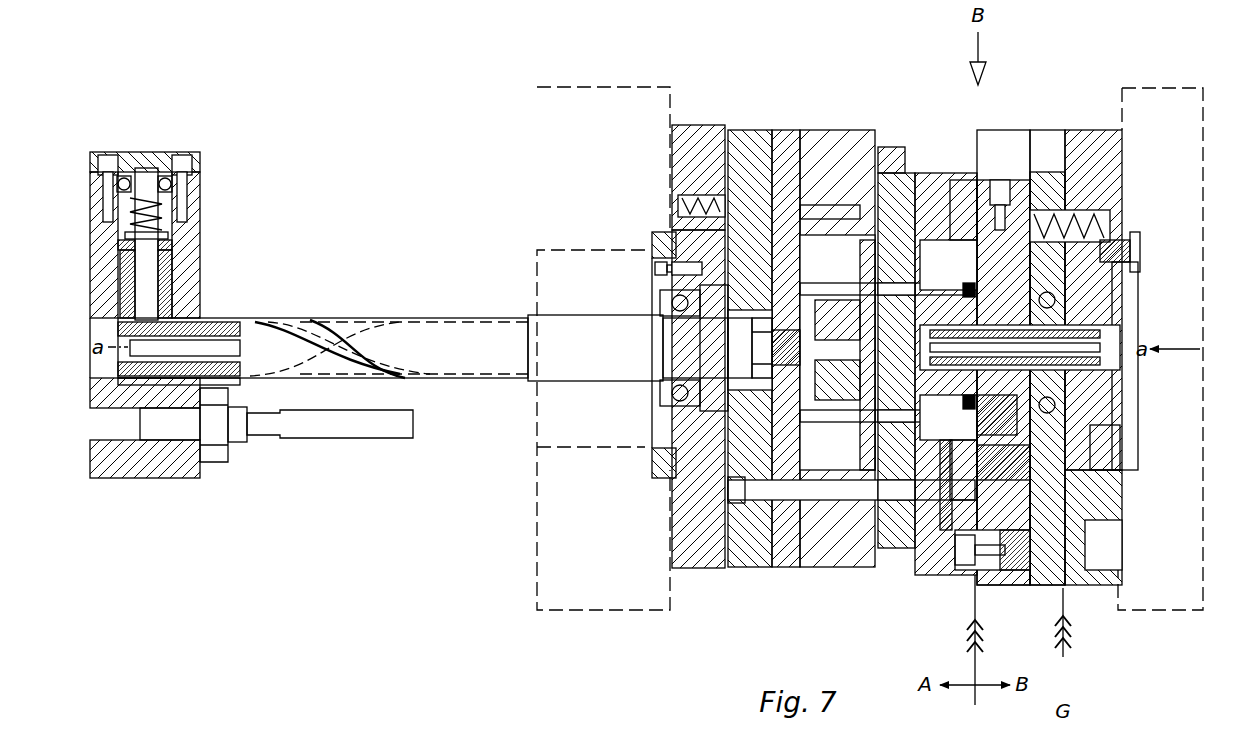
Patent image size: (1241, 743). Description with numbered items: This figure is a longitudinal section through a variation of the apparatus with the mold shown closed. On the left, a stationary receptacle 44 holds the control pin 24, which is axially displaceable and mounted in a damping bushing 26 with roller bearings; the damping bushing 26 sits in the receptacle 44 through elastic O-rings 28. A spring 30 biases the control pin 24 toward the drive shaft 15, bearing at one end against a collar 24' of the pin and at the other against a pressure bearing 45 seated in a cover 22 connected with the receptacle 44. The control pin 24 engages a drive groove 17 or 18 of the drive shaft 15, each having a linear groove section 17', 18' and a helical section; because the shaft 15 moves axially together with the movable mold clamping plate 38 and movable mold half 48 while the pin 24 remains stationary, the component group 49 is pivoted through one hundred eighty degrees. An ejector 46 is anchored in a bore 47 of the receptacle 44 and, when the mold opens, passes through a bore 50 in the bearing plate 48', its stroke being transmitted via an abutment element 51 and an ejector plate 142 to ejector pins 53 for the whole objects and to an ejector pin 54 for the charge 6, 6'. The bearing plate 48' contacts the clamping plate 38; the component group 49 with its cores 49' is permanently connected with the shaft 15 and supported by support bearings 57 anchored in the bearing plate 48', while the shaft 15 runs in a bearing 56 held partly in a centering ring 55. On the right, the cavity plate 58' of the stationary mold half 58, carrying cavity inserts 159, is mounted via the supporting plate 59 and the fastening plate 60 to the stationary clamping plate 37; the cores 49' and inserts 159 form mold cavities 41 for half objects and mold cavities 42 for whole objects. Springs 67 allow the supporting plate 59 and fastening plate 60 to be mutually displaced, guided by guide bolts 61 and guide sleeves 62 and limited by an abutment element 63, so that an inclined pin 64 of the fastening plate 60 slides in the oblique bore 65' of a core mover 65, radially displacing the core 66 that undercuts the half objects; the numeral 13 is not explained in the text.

The charge 6 is at (946, 321).
The charge 6' is at (947, 284).
The spindle 13 is at (665, 347).
The drive shaft 15 is at (585, 356).
The drive groove 17 is at (323, 323).
The linear groove section 17' is at (414, 397).
The drive groove 18 is at (414, 299).
The linear groove section 18' is at (179, 449).
The cover 22 is at (110, 165).
The control pin 24 is at (197, 244).
The collar 24' is at (194, 219).
The damping bushing 26 is at (173, 244).
The elastic O-rings 28 is at (170, 308).
The spring 30 is at (128, 206).
The stationary clamping plate 37 is at (1165, 108).
The movable mold clamping plate 38 is at (612, 108).
The mold cavities for the half objects 41 is at (1030, 395).
The mold cavities for the whole objects 42 is at (1030, 265).
The receptacle 44 is at (168, 270).
The pressure bearing 45 is at (128, 176).
The ejector 46 is at (343, 430).
The bore 47 is at (124, 420).
The movable mold half 48 is at (897, 306).
The bearing plate 48' is at (698, 151).
The component group 49 is at (804, 315).
The cores 49' is at (851, 551).
The bore 50 is at (705, 432).
The abutment element 51 is at (780, 418).
The ejector pins 53 is at (865, 405).
The ejector pin 54 is at (763, 205).
The centering ring 55 is at (655, 460).
The bearing 56 is at (655, 310).
The support bearings 57 is at (893, 145).
The stationary mold half 58 is at (1049, 302).
The cavity plate 58' is at (1007, 325).
The supporting plate 59 is at (1050, 140).
The fastening plate 60 is at (1085, 140).
The guide bolts 61 is at (1093, 563).
The guide sleeves 62 is at (1020, 575).
The limiting abutment element 63 is at (960, 570).
The inclined pin 64 is at (1053, 468).
The core mover 65 is at (1083, 480).
The oblique bore 65' is at (992, 588).
The core 66 is at (948, 505).
The springs 67 is at (1075, 212).
The ejector plate 142 is at (800, 400).
The cavity inserts 159 is at (1020, 417).